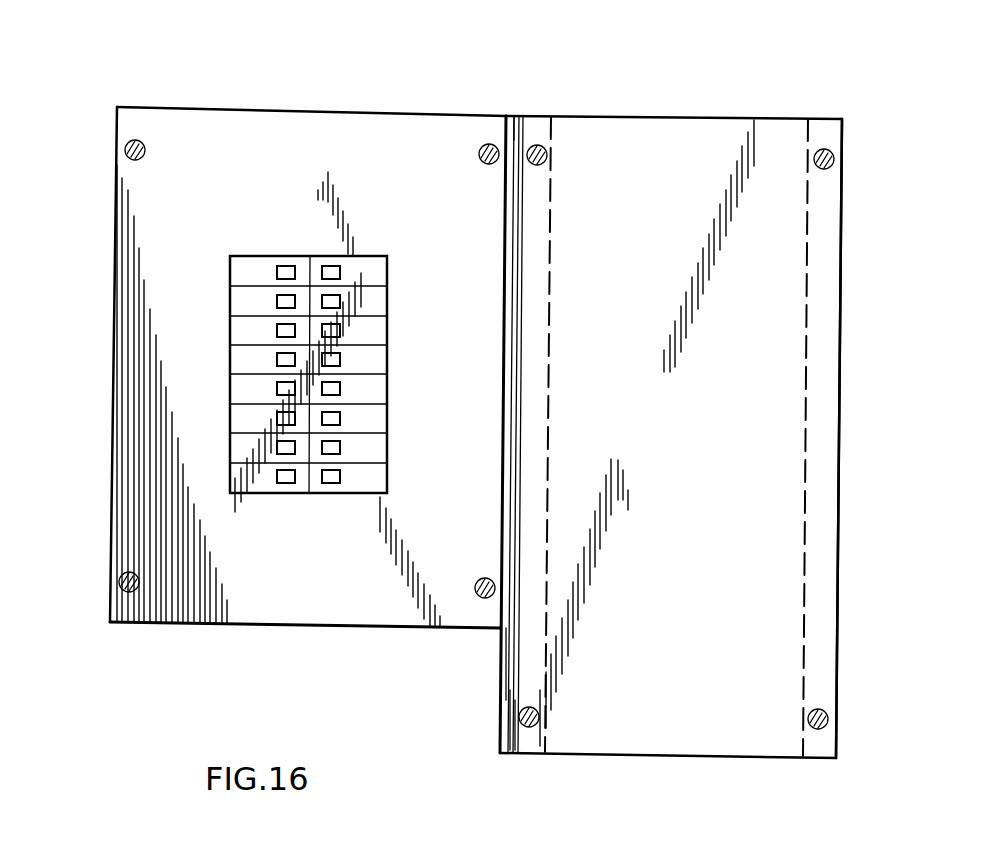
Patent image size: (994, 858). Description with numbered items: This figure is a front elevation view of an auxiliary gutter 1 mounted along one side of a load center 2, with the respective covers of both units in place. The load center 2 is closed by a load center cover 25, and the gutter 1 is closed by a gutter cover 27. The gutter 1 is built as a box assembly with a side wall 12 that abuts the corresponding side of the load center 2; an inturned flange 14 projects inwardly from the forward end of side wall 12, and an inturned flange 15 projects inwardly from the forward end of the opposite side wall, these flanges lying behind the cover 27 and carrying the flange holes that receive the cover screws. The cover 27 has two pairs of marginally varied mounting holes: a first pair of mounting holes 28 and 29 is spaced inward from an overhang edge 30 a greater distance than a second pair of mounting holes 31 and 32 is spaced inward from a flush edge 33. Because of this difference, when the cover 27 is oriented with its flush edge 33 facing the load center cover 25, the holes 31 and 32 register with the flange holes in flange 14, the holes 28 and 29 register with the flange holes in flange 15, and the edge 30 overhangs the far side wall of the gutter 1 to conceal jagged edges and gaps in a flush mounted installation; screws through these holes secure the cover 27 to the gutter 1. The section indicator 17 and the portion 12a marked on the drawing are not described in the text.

The auxiliary gutter 1 is at (845, 525).
The load center 2 is at (108, 354).
The side wall 12 is at (500, 738).
The hinge upper portion 12a is at (507, 666).
The inturned flange 14 is at (540, 201).
The inturned flange 15 is at (818, 429).
The section line 17- 17 is at (438, 713).
The load center cover 25 is at (198, 285).
The cover 27 is at (760, 372).
The mounting hole 28 is at (548, 153).
The mounting hole 29 is at (531, 728).
The overhang edge 30 is at (523, 130).
The mounting hole 31 is at (835, 156).
The mounting hole 32 is at (819, 730).
The flush edge 33 is at (845, 281).